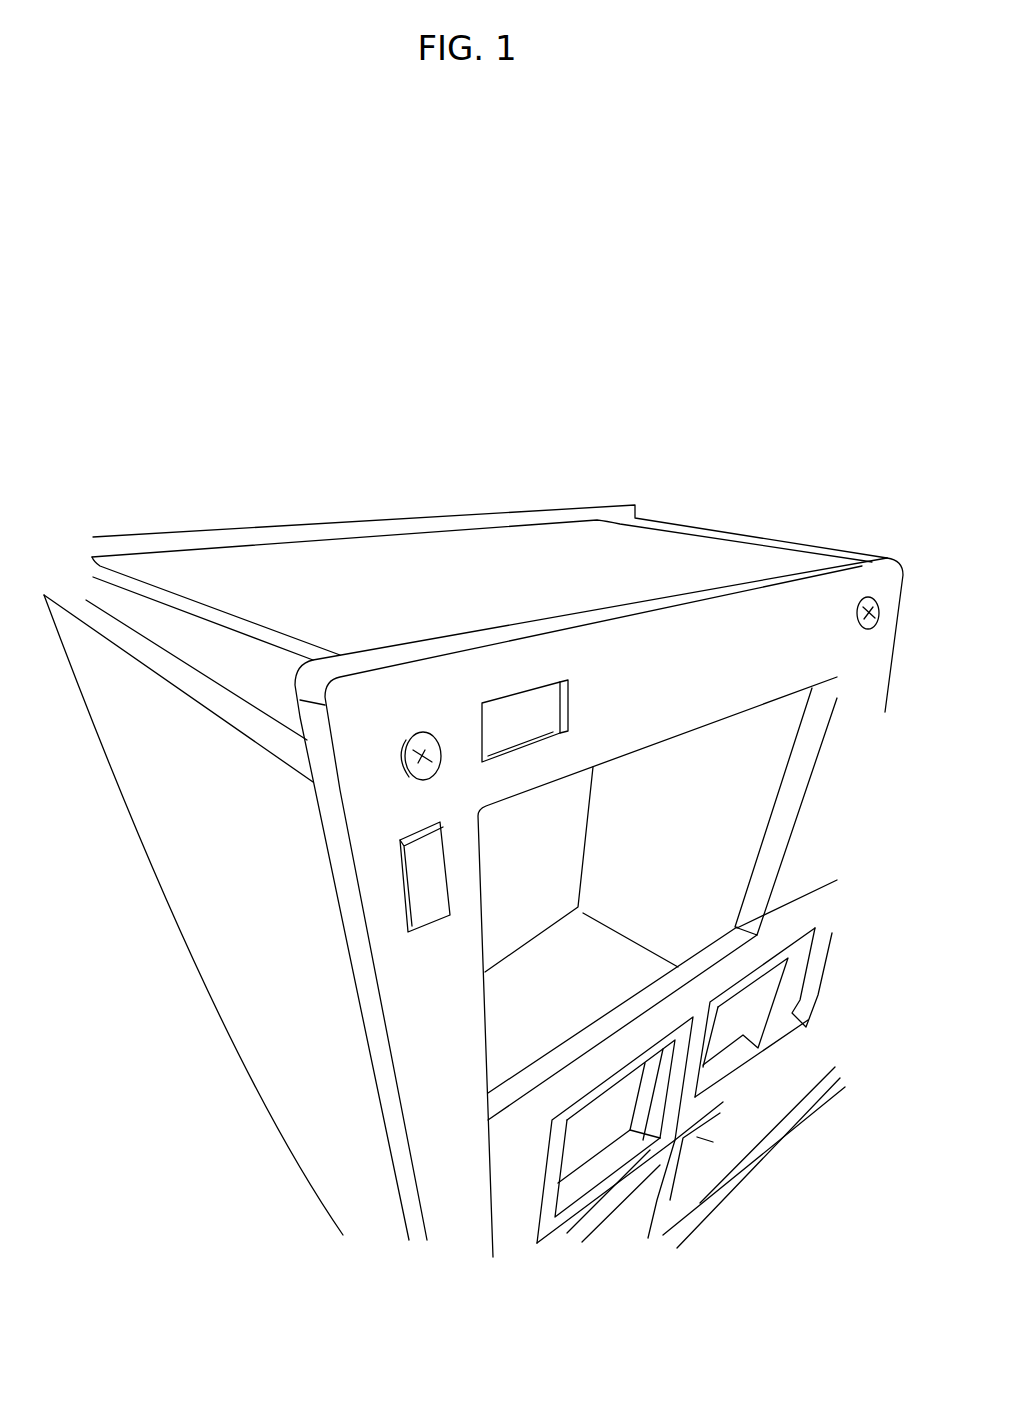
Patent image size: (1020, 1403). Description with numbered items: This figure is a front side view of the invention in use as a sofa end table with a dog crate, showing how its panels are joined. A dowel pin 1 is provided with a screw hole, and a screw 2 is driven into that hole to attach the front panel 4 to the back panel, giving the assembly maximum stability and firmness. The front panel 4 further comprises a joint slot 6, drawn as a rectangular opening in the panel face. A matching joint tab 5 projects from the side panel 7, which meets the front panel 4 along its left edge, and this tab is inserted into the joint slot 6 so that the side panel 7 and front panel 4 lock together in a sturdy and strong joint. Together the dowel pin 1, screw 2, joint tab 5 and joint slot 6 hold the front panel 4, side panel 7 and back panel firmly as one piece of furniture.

The dowel pin 1 is at (217, 657).
The screw 2 is at (421, 736).
The front panel 4 is at (603, 673).
The joint tab 5 is at (422, 878).
The joint slot 6 is at (517, 713).
The side panel 7 is at (277, 798).